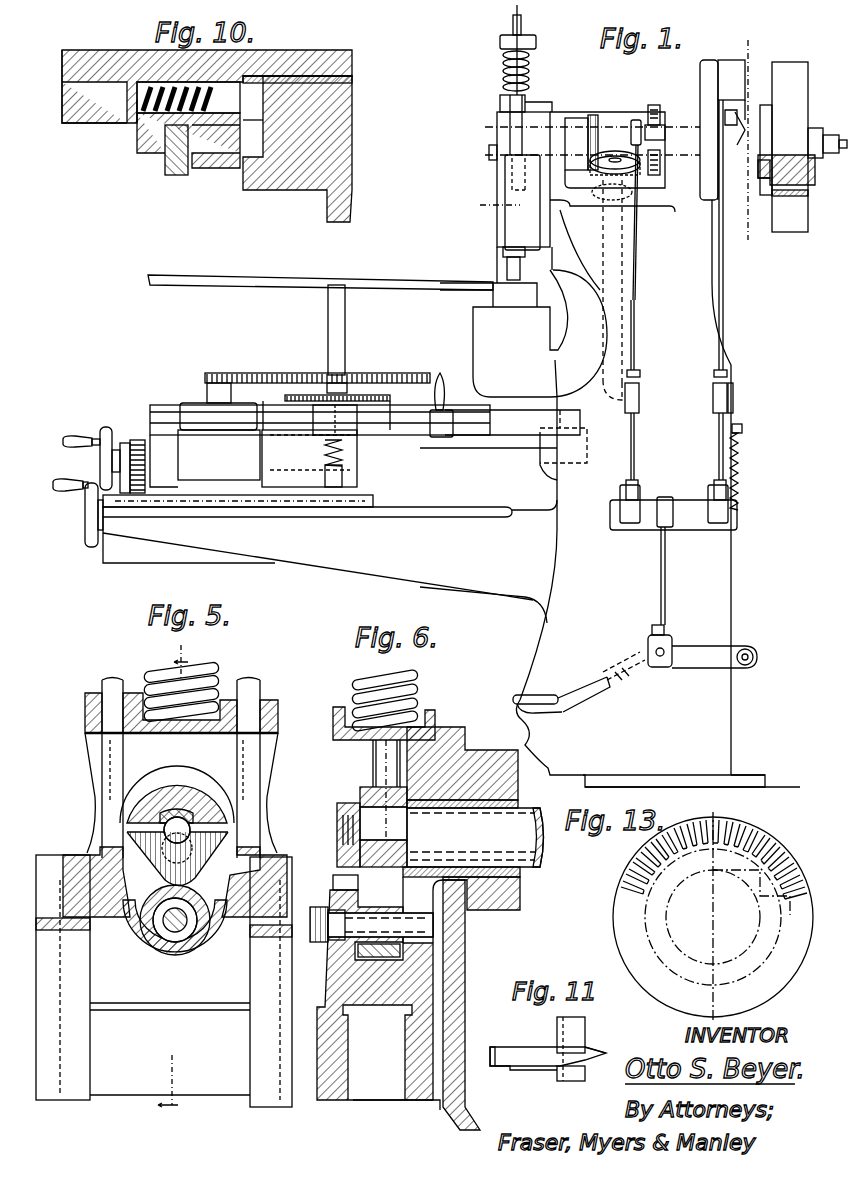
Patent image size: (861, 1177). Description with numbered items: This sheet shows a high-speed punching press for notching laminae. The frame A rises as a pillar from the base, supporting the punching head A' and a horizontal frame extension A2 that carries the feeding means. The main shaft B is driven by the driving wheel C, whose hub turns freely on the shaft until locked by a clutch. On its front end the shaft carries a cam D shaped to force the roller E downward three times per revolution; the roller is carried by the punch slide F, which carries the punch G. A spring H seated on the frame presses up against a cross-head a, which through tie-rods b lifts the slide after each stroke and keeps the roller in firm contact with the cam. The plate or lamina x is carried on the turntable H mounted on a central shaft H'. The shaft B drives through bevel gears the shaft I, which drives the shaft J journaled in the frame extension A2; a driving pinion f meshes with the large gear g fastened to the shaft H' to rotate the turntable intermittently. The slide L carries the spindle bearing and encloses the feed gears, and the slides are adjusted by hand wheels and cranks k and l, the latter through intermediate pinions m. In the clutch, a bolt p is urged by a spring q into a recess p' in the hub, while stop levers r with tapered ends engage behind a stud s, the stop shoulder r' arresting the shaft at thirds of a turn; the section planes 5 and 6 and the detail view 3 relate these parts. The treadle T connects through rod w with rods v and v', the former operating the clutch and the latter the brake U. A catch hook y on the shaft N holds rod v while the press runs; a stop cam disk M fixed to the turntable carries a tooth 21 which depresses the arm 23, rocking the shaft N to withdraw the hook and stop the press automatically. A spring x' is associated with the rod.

In FIG. 1, the frame A is at (658, 682).
In FIG. 1, the punching head A' is at (557, 254).
In FIG. 1, the frame extension A2 is at (330, 547).
In FIG. 10, the main shaft B is at (68, 78).
In FIG. 1, the main shaft B is at (600, 120).
In FIG. 6, the main shaft B is at (475, 837).
In FIG. 10, the driving wheel C is at (330, 172).
In FIG. 1, the driving wheel C is at (795, 60).
In FIG. 1, the cam D is at (505, 128).
In FIG. 5, the cam D is at (205, 790).
In FIG. 6, the cam D is at (365, 800).
In FIG. 1, the roller E is at (505, 178).
In FIG. 5, the roller E is at (205, 895).
In FIG. 6, the roller E is at (403, 955).
In FIG. 5, the punch slide F is at (164, 981).
In FIG. 6, the punch slide F is at (398, 990).
In FIG. 1, the punch G is at (505, 262).
In FIG. 1, the spring / turntable H is at (376, 180).
In FIG. 5, the spring / turntable H is at (191, 684).
In FIG. 6, the spring / turntable H is at (393, 690).
In FIG. 1, the central shaft H' is at (349, 330).
In FIG. 1, the shaft I is at (625, 275).
In FIG. 1, the shaft J is at (430, 440).
In FIG. 1, the slide L is at (205, 458).
In FIG. 1, the stop cam disk M is at (390, 398).
In FIG. 1, the shaft N is at (468, 430).
In FIG. 1, the treadle lever T is at (635, 669).
In FIG. 1, the brake U is at (658, 100).
In FIG. 1, the cross-head a is at (530, 38).
In FIG. 1, the tie-rods b is at (505, 110).
In FIG. 5, the tie-rods b is at (102, 684).
In FIG. 6, the tie-rods b is at (373, 757).
In FIG. 1, the driving pinion f is at (205, 378).
In FIG. 1, the large gear g is at (395, 375).
In FIG. 1, the hand wheel and crank k is at (80, 495).
In FIG. 1, the hand wheel and crank l is at (82, 433).
In FIG. 1, the intermediate pinions m is at (138, 438).
In FIG. 10, the bolt p is at (188, 143).
In FIG. 1, the bolt p is at (786, 209).
In FIG. 10, the recess p' is at (307, 132).
In FIG. 1, the recess p' is at (801, 203).
In FIG. 10, the spring q is at (133, 112).
In FIG. 10, the stop levers r is at (169, 162).
In FIG. 1, the stop levers r is at (742, 153).
In FIG. 11, the stop levers r is at (548, 1055).
In FIG. 11, the stop shoulder r' is at (526, 1084).
In FIG. 10, the stud / lug s is at (152, 118).
In FIG. 11, the stud / lug s is at (566, 1081).
In FIG. 1, the rod v is at (728, 300).
In FIG. 1, the rod v' is at (644, 400).
In FIG. 1, the rod w is at (665, 575).
In FIG. 1, the plate or lamina x is at (316, 293).
In FIG. 13, the plate or lamina x is at (713, 917).
In FIG. 1, the spring on rod x' is at (746, 467).
In FIG. 1, the catch hook y is at (730, 395).
In FIG. 1, the section line 3 is at (745, 52).
In FIG. 1, the section line 5— 5 is at (513, 14).
In FIG. 5, the section line 5— 5 is at (168, 1093).
In FIG. 5, the section line 6— 6 is at (176, 662).
In FIG. 1, the tooth 21 is at (325, 408).
In FIG. 1, the arm 23 is at (340, 418).